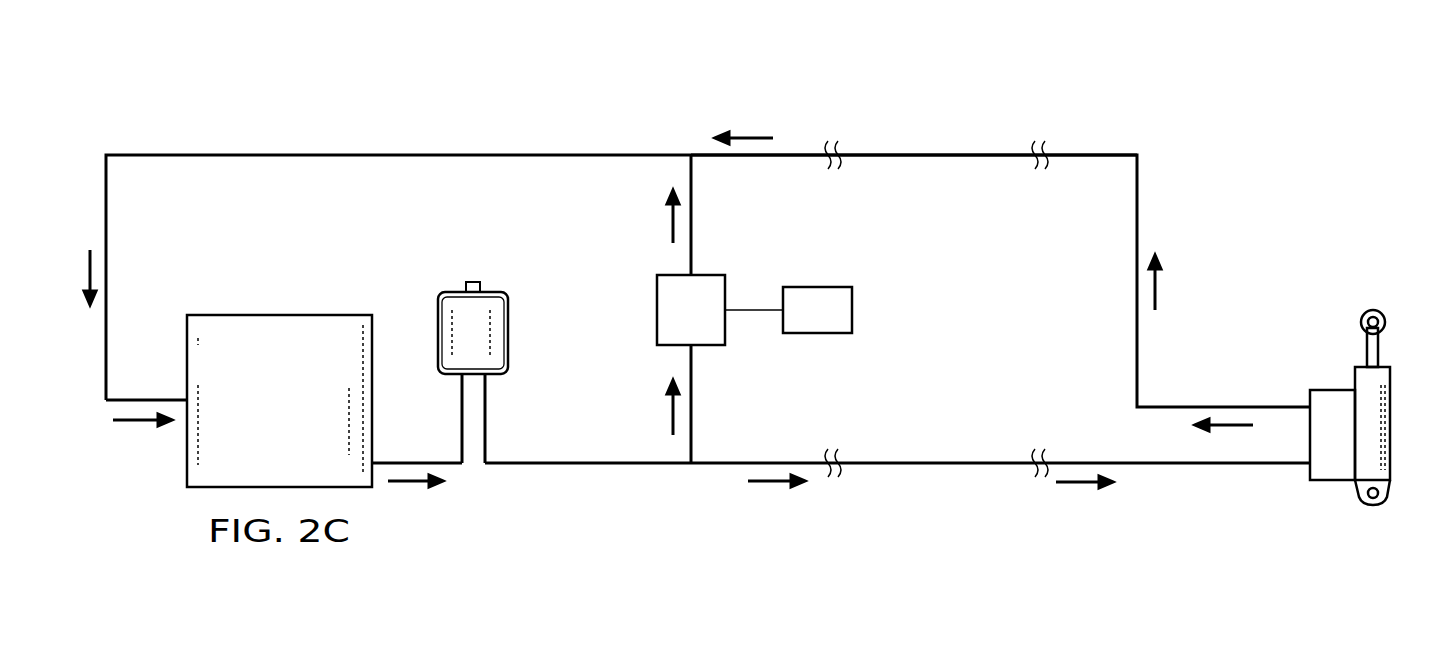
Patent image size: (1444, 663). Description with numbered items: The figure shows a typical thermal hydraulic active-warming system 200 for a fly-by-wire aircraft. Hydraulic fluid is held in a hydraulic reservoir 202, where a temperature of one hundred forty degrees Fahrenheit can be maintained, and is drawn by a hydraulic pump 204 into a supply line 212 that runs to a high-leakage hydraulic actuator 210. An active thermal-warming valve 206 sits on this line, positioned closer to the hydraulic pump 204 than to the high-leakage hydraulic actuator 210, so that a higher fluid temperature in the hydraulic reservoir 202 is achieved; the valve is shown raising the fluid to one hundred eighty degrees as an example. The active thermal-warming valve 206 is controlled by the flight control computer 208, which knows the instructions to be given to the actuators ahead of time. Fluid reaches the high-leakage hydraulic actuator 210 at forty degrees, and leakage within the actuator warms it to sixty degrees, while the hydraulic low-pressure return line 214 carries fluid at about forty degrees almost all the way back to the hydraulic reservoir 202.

The thermal hydraulic active-warming system 200 is at (258, 102).
The hydraulic reservoir 202 is at (187, 458).
The hydraulic pump 204 is at (498, 374).
The active thermal-warming valve 206 is at (712, 345).
The flight control computer 208 is at (855, 298).
The high-leakage hydraulic actuator 210 is at (1333, 483).
The supply line 212 is at (535, 463).
The hydraulic low-pressure return line 214 is at (953, 158).